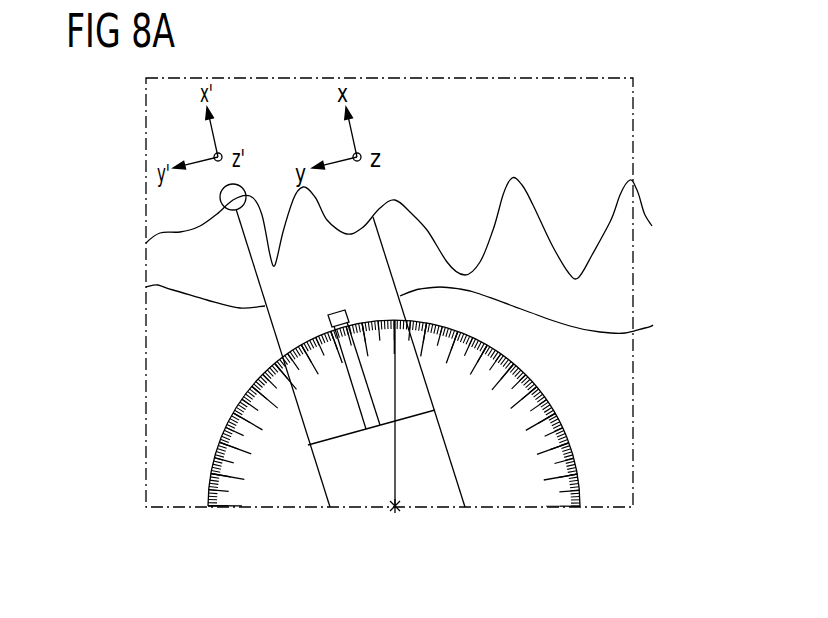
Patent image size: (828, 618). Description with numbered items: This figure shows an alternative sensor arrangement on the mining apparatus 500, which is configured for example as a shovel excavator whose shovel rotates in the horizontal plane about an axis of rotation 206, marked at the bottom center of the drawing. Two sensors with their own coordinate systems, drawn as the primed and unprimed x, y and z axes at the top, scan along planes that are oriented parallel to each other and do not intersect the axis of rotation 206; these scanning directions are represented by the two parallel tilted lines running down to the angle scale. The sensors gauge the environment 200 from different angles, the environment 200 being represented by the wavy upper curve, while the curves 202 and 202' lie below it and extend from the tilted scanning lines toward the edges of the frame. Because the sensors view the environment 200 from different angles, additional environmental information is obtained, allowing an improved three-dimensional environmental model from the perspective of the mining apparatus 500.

The environment 200 is at (652, 226).
The second sensor signal curve 202 is at (548, 317).
The second sensor signal curve (preceding section) 202' is at (171, 291).
The mining apparatus 500 is at (364, 493).
The axis of rotation 206 is at (395, 510).